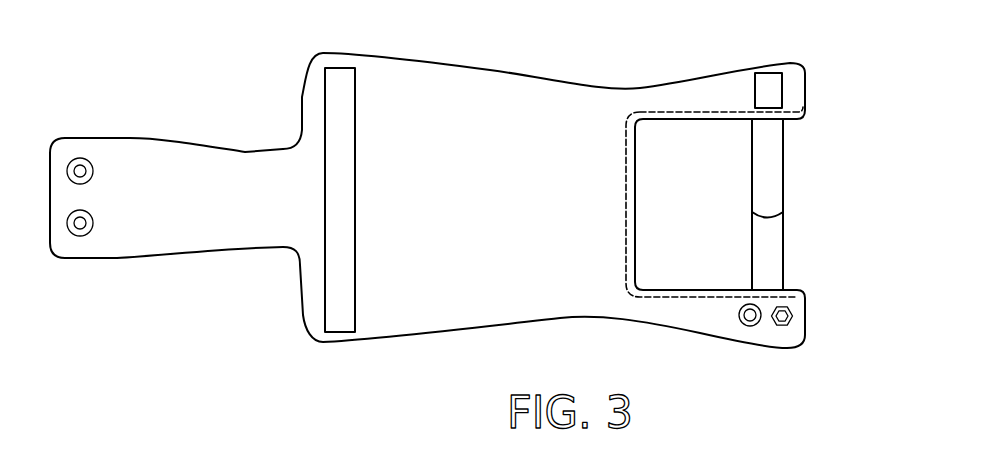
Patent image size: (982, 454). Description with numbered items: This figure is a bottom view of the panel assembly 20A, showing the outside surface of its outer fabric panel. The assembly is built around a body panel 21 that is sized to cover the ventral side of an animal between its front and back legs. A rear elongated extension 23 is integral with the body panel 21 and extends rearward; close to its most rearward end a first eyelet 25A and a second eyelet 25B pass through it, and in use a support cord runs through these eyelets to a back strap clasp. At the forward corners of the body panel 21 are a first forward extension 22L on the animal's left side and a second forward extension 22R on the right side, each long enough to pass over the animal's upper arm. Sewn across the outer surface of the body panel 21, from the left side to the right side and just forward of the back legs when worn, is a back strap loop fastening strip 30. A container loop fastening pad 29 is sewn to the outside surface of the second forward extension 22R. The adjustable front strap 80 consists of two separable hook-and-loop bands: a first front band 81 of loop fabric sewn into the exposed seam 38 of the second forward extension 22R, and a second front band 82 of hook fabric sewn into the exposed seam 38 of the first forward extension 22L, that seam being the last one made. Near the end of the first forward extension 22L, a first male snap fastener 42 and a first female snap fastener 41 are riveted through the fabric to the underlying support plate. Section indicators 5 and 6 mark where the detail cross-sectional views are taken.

The panel assembly 20A is at (454, 229).
The body panel 21 is at (485, 207).
The second forward extension 22R is at (672, 83).
The first forward extension 22L is at (672, 327).
The rear elongated extension 23 is at (128, 258).
The first eyelet 25A is at (92, 176).
The second eyelet 25B is at (92, 219).
The container loop fastening pad 29 is at (755, 97).
The back strap loop fastening strip 30 is at (355, 225).
The exposed seam 38 is at (625, 177).
The first female snap fastener 41 is at (786, 324).
The first male snap fastener 42 is at (757, 307).
The front strap 80 is at (749, 204).
The first front band 81 is at (787, 164).
The second front band 82 is at (787, 234).
The section line 5- 5 is at (242, 140).
The section line 6- 6 is at (760, 285).